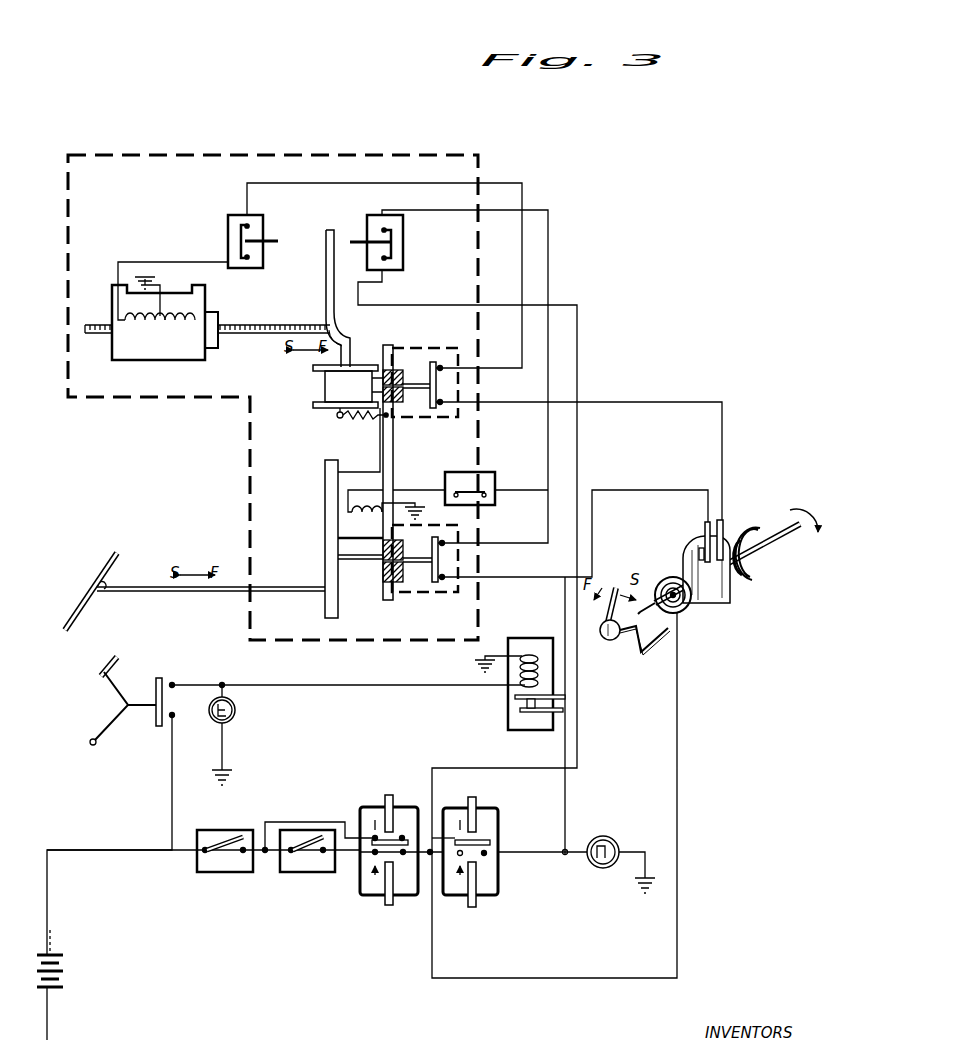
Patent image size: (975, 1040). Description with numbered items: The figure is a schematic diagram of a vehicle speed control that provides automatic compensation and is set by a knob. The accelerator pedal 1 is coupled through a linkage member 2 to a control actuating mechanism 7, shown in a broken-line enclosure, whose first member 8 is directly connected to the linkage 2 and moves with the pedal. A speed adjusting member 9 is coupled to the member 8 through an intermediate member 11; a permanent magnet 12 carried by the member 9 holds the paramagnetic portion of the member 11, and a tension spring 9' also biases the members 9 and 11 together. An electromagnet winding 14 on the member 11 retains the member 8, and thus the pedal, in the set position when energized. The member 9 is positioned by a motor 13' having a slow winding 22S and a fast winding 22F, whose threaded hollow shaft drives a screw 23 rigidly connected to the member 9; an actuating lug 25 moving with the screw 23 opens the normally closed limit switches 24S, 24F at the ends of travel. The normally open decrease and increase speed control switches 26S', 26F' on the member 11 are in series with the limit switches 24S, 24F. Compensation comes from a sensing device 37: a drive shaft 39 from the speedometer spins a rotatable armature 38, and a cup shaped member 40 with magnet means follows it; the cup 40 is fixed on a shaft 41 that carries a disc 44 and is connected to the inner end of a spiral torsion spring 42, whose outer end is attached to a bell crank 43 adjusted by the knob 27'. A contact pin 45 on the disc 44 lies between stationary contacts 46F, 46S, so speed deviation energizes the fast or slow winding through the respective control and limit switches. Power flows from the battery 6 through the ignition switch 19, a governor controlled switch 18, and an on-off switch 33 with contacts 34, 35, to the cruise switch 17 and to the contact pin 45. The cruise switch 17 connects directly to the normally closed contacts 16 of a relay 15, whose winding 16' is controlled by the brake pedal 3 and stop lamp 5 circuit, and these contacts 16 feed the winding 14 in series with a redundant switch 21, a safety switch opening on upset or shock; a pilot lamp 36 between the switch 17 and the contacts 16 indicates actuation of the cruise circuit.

The accelerator pedal 1 is at (100, 588).
The linkage member 2 is at (138, 585).
The brake pedal 3 is at (108, 688).
The stop lamp 5 is at (236, 709).
The battery 6 is at (55, 955).
The control actuating mechanism 7 is at (484, 156).
The first member 8 is at (324, 500).
The speed adjusting member 9 is at (354, 335).
The tension spring 9' is at (353, 427).
The intermediate member 11 is at (382, 443).
The permanent magnet 12 is at (318, 386).
The motor 13' is at (165, 335).
The electromagnet winding 14 is at (352, 520).
The relay 15 is at (508, 703).
The relay contacts 16 is at (513, 721).
The relay winding 16' is at (488, 671).
The cruise switch 17 is at (500, 884).
The governor controlled switch 18 is at (312, 873).
The ignition switch 19 is at (232, 873).
The redundant switch 21 is at (492, 472).
The slow winding 22S is at (141, 324).
The fast winding 22F is at (178, 327).
The screw 23 is at (292, 326).
The slow limit switch 24S is at (265, 228).
The fast limit switch 24F is at (406, 255).
The actuating lug 25 is at (330, 232).
The decrease speed control switch 26S' is at (420, 368).
The increase speed control switch 26F' is at (398, 579).
The knob 27' is at (608, 640).
The on-off switch 33 is at (366, 896).
The contacts 34 is at (401, 857).
The contacts 35 is at (404, 835).
The pilot lamp 36 is at (610, 840).
The sensing device 37 is at (728, 612).
The rotatable armature 38 is at (770, 548).
The drive shaft 39 is at (795, 535).
The cup shaped member 40 is at (745, 578).
The shaft 41 is at (685, 608).
The spiral torsion spring 42 is at (678, 613).
The bell crank 43 is at (648, 658).
The disc 44 is at (692, 560).
The contact pin 45 is at (702, 548).
The fast stationary contact 46F is at (708, 522).
The slow stationary contact 46S is at (724, 522).